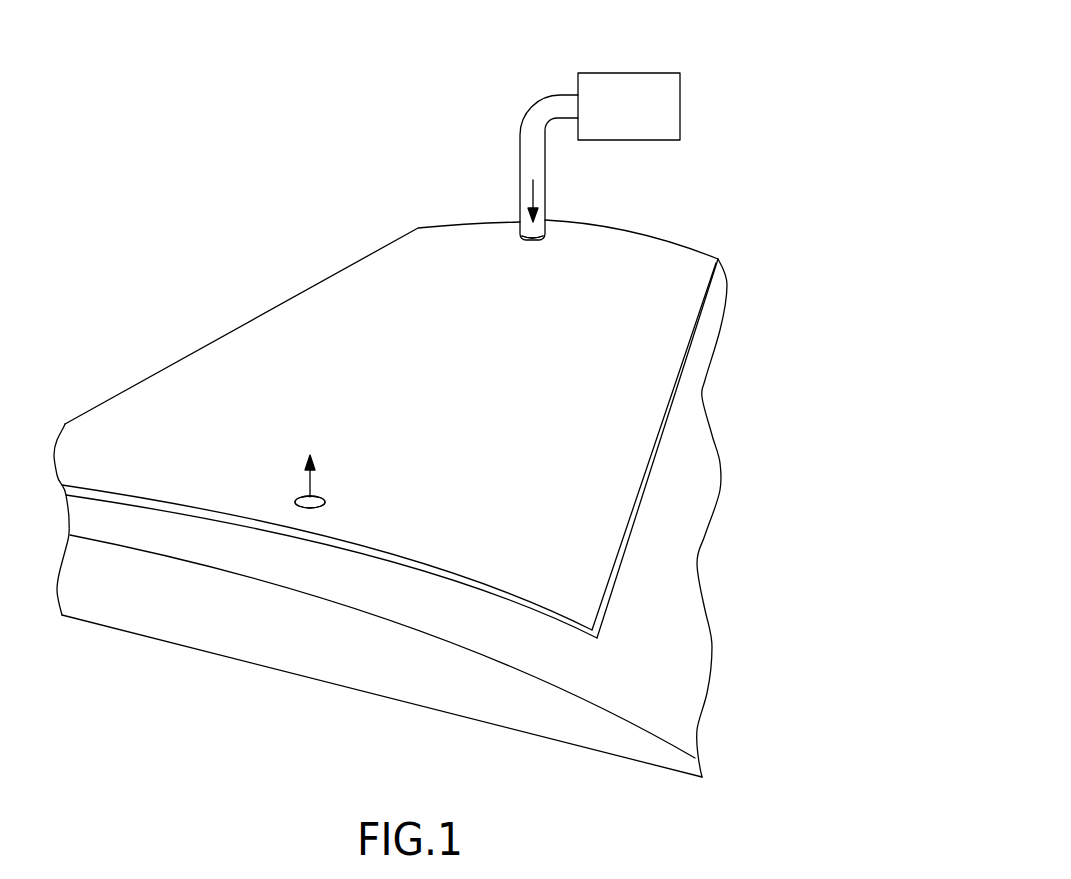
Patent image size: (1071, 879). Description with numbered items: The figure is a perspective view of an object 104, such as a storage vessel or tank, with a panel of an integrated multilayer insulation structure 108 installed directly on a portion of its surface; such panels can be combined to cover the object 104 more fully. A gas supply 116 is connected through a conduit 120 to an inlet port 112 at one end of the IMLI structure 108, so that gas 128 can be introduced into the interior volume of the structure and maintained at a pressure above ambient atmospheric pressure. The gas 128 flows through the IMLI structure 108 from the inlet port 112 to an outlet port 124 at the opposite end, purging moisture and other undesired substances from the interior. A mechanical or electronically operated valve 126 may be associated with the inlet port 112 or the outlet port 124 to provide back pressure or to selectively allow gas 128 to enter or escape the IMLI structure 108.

The object 104 is at (690, 690).
The integrated multilayer insulation structure 108 is at (680, 252).
The inlet port 112 is at (525, 232).
The gas supply 116 is at (668, 72).
The conduit 120 is at (527, 110).
The outlet port 124 is at (293, 503).
The valve 126 is at (419, 372).
The gas 128 is at (537, 192).